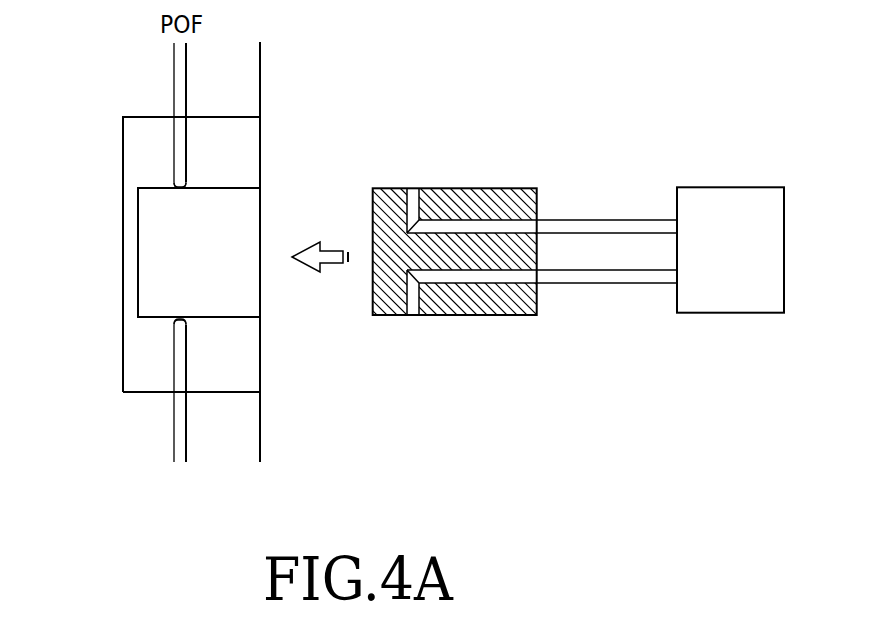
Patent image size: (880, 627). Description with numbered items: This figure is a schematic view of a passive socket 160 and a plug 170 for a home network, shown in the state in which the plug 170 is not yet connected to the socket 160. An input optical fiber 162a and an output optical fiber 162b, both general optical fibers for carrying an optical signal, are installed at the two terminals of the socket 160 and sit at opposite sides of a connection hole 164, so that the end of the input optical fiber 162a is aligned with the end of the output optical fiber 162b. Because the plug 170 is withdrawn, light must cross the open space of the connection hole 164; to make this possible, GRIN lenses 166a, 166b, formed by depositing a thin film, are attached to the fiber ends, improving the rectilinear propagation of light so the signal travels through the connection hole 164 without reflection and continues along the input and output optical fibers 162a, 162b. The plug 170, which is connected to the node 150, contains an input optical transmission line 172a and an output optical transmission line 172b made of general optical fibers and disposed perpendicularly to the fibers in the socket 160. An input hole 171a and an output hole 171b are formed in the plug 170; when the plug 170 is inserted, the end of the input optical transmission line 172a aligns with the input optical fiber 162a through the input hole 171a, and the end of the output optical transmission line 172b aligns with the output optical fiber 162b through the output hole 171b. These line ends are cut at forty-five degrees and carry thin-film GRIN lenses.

The node 150 is at (728, 187).
The passive socket 160 is at (253, 143).
The input optical fiber 162a is at (177, 137).
The output optical fiber 162b is at (178, 421).
The connection hole 164 is at (287, 194).
The GRIN lens 166a is at (175, 187).
The GRIN lens 166b is at (175, 327).
The plug 170 is at (468, 188).
The input hole 171a is at (413, 198).
The output hole 171b is at (413, 308).
The input optical transmission line 172a is at (495, 228).
The output optical transmission line 172b is at (477, 275).